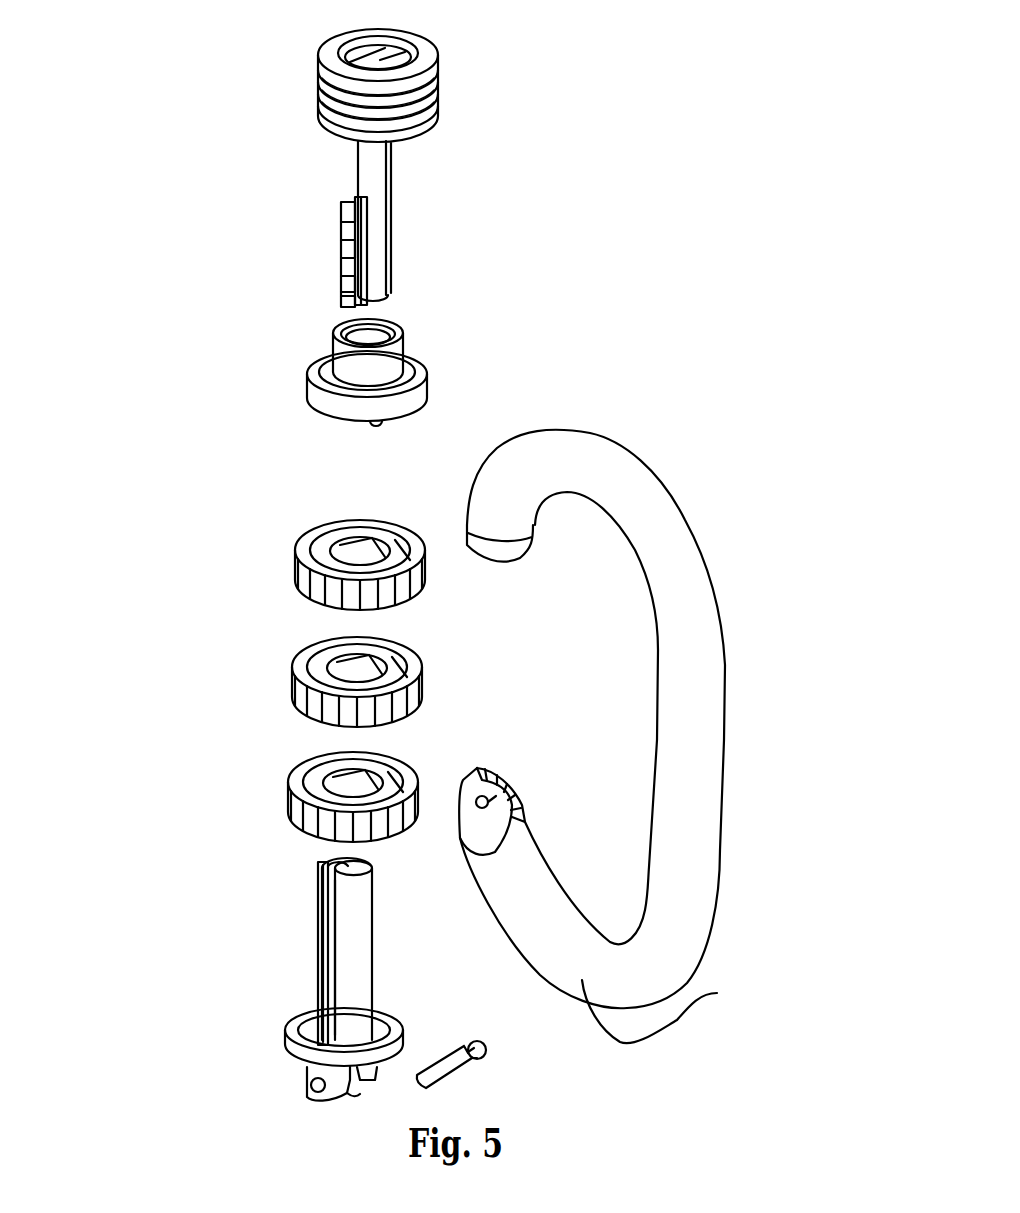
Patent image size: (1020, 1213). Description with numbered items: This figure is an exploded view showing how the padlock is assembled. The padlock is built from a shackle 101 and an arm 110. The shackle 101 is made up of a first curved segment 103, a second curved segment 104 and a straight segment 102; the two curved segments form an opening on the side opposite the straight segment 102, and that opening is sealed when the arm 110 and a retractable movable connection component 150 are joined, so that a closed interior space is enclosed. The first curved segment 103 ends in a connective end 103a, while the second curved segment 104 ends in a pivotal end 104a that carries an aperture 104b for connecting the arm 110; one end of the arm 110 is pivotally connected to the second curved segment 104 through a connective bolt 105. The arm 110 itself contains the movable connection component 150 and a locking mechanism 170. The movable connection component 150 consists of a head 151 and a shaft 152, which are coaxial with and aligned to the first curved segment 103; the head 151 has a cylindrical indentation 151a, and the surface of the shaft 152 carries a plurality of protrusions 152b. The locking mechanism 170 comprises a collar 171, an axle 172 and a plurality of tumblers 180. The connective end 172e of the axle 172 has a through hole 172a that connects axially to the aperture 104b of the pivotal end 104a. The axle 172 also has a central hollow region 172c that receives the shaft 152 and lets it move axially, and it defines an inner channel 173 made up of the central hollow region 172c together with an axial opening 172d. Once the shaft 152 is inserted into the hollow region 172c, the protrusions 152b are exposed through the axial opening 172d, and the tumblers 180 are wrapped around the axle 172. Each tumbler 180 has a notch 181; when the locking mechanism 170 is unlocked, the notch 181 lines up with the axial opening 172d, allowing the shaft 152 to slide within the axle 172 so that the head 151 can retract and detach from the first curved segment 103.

The shackle 101 is at (790, 533).
The straight segment 102 is at (663, 797).
The first curved segment 103 is at (667, 532).
The connective end 103a is at (498, 556).
The second curved segment 104 is at (705, 993).
The pivotal end 104a is at (478, 832).
The aperture 104b is at (512, 783).
The connective bolt 105 is at (463, 1060).
The arm 110 is at (106, 731).
The movable connection component 150 is at (207, 190).
The head 151 is at (350, 164).
The cylindrical indentation 151a is at (396, 45).
The shaft 152 is at (341, 177).
The protrusions 152b is at (340, 298).
The locking mechanism 170 is at (139, 1150).
The collar 171 is at (307, 380).
The axle 172 is at (278, 993).
The through hole 172a is at (312, 1087).
The central hollow region 172c is at (317, 867).
The axial opening 172d is at (310, 965).
The connective end 172e is at (335, 1095).
The inner channel 173 is at (312, 927).
The tumblers 180 is at (287, 787).
The notch 181 is at (403, 578).